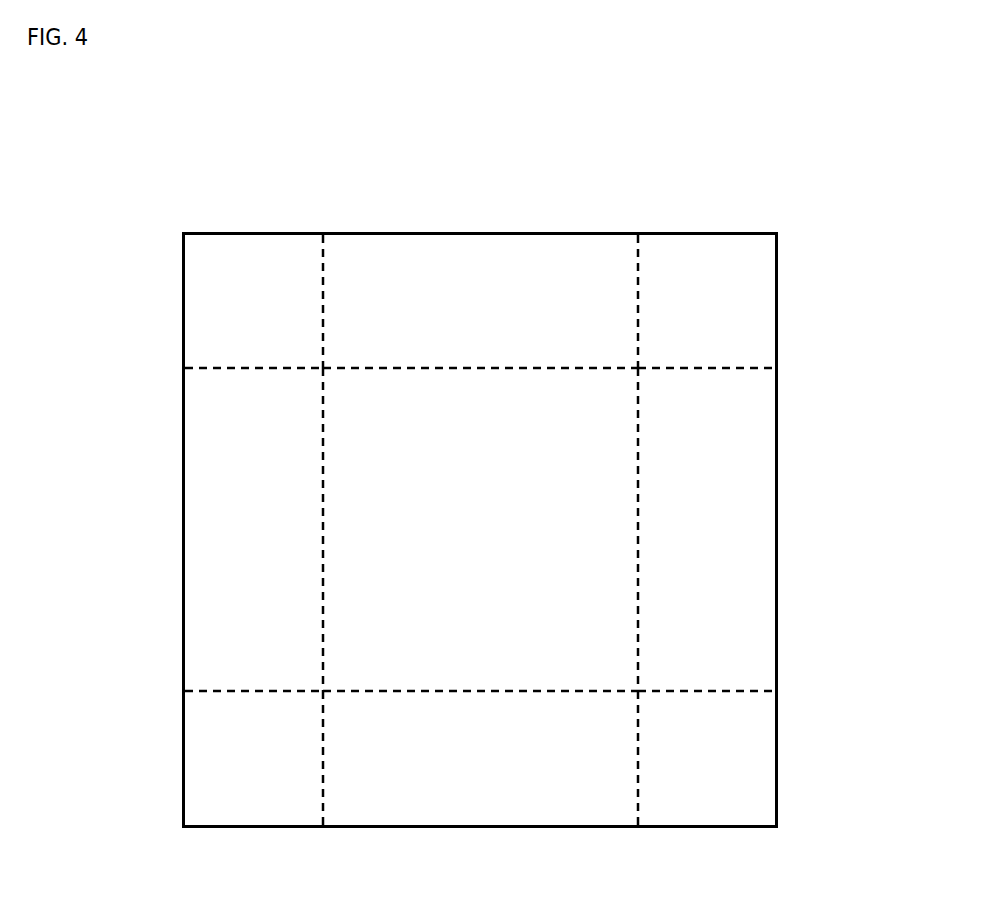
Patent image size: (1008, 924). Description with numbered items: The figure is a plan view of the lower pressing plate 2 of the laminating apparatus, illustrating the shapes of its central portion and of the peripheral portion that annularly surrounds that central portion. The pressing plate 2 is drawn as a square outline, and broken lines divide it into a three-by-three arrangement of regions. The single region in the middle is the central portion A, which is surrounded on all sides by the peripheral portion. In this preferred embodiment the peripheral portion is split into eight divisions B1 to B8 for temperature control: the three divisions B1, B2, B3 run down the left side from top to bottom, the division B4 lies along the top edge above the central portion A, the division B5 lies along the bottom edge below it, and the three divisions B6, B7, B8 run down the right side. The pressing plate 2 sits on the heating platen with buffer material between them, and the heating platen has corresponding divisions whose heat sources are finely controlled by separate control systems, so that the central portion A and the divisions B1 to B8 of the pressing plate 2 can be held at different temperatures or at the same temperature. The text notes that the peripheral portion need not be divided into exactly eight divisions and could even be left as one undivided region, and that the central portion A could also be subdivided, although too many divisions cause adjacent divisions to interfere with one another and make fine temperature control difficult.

The pressing plate 2 is at (412, 222).
The central portion A is at (597, 505).
The division B1 of peripheral portion B1 is at (212, 322).
The division B2 of peripheral portion B2 is at (212, 603).
The division B3 of peripheral portion B3 is at (212, 772).
The division B4 of peripheral portion B4 is at (527, 263).
The division B5 of peripheral portion B5 is at (512, 798).
The division B6 of peripheral portion B6 is at (753, 305).
The division B7 of peripheral portion B7 is at (750, 612).
The division B8 of peripheral portion B8 is at (750, 765).